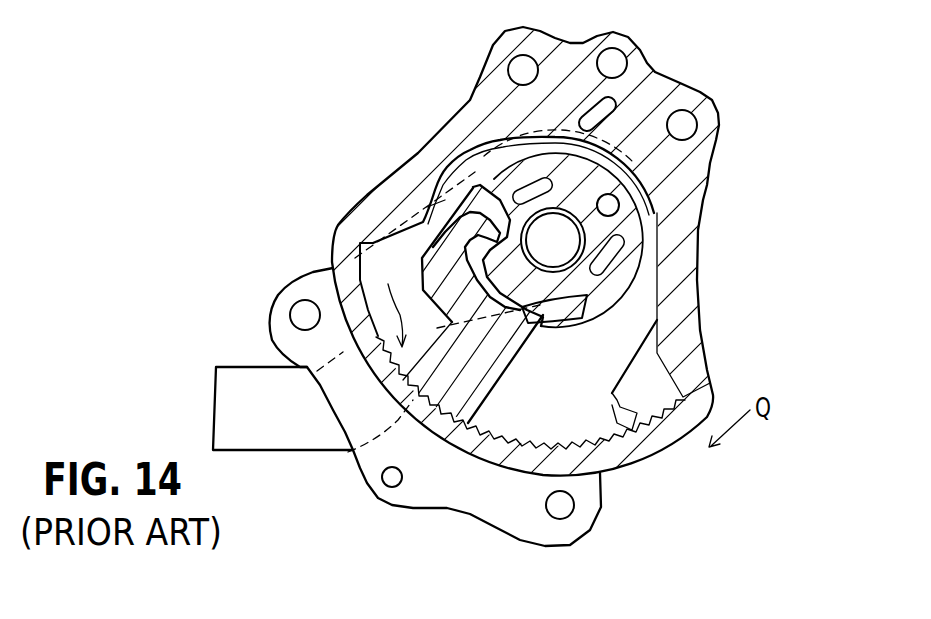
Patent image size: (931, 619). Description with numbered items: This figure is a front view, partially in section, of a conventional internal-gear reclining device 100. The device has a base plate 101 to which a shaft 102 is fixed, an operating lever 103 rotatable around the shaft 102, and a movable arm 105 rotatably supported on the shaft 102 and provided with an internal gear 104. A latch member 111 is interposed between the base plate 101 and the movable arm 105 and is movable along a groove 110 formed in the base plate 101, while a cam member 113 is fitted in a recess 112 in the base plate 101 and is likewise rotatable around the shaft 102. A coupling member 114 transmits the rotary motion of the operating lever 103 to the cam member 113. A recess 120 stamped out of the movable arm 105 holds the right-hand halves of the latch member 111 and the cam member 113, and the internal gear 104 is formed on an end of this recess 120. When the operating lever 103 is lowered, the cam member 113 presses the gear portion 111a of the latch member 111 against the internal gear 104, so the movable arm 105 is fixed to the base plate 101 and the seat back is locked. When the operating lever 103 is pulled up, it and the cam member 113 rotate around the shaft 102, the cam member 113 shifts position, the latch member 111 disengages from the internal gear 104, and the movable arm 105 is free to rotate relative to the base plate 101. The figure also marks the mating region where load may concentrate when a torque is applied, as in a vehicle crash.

The internal-gear reclining device 100 is at (381, 88).
The base plate 101 is at (614, 509).
The shaft 102 is at (605, 233).
The operating lever 103 is at (302, 440).
The internal gear 104 is at (612, 447).
The movable arm 105 is at (715, 327).
The groove 110 is at (518, 342).
The latch member 111 is at (487, 380).
The gear portion 111a is at (430, 420).
The recess 112 is at (492, 158).
The cam member 113 is at (440, 163).
The coupling member 114 is at (620, 207).
The recess 120 is at (400, 245).